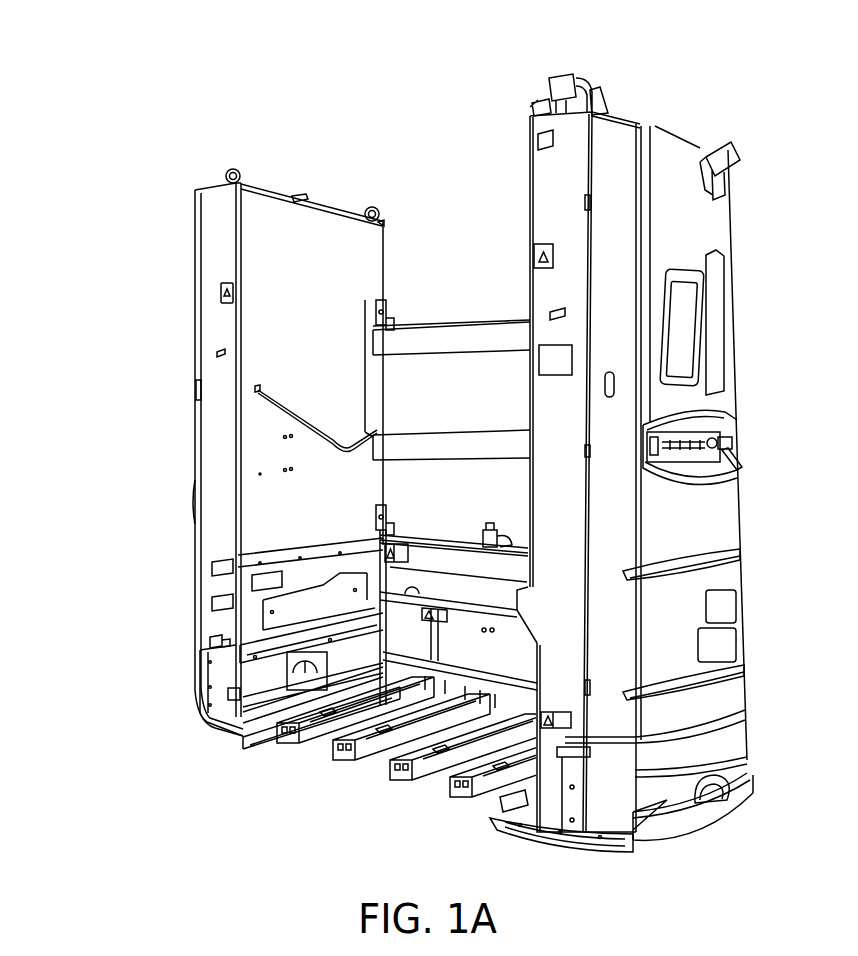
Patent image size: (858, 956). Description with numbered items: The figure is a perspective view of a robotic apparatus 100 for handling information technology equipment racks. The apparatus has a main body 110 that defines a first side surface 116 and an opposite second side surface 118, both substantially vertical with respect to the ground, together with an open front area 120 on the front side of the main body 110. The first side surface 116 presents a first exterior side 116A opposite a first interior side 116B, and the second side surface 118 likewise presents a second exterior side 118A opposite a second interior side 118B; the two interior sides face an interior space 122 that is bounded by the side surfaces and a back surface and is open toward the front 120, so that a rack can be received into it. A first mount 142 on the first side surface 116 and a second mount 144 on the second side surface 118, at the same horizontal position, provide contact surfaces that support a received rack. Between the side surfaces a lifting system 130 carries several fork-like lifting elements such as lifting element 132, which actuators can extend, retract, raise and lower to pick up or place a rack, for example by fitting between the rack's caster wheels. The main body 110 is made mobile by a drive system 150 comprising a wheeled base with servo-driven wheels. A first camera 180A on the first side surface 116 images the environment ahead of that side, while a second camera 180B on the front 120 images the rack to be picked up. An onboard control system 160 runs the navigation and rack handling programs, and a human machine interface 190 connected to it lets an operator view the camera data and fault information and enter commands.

The robotic apparatus 100 is at (462, 56).
The main body 110 is at (626, 106).
The first side surface 116 is at (220, 258).
The first exterior side 116A is at (203, 186).
The first interior side 116B is at (266, 284).
The second side surface 118 is at (622, 148).
The second exterior side 118A is at (667, 262).
The second interior side 118B is at (525, 198).
The open front area 120 is at (249, 430).
The interior space 122 is at (390, 218).
The lifting system 130 is at (447, 595).
The lifting element 132 is at (335, 780).
The first mount 142 is at (248, 735).
The second mount 144 is at (521, 802).
The drive system 150 is at (712, 837).
The onboard control system 160 is at (700, 531).
The first camera 180A is at (727, 172).
The second camera 180B is at (543, 92).
The human machine interface 190 is at (697, 403).